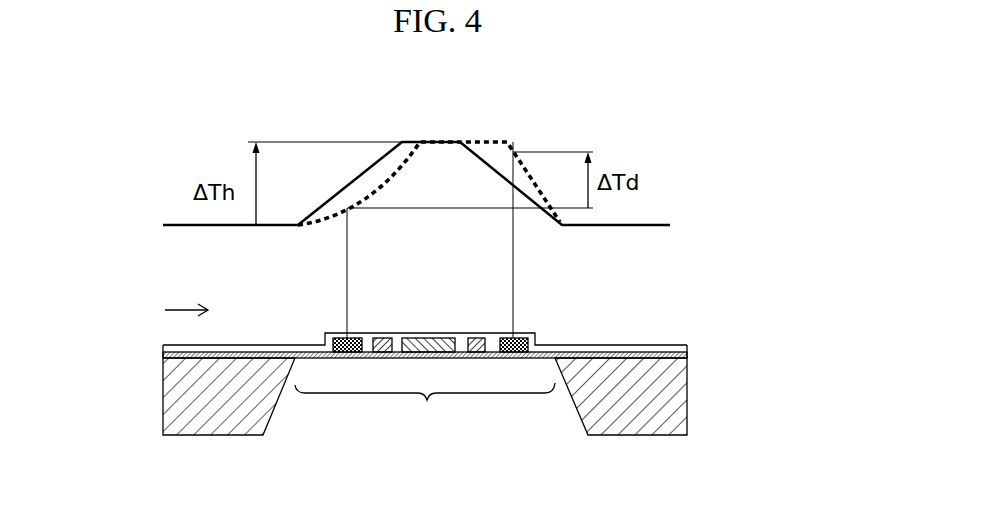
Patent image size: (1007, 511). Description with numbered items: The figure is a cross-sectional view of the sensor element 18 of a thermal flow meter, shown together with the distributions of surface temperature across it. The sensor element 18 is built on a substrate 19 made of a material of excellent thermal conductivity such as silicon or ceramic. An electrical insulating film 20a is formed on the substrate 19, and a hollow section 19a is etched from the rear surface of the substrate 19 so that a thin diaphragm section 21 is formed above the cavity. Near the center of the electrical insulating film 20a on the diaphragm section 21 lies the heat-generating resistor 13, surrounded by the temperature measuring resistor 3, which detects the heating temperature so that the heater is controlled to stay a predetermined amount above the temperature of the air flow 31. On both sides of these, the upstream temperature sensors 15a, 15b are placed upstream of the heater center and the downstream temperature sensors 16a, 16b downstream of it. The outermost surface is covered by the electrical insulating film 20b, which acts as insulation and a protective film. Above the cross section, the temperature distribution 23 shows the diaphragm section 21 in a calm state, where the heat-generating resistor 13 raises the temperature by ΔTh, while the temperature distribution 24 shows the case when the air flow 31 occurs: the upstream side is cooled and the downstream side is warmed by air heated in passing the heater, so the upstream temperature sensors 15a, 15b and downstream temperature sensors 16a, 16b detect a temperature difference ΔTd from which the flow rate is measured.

The temperature measuring resistor 3 is at (378, 336).
The heat-generating resistor 13 is at (430, 336).
The upstream temperature sensor 15a is at (302, 308).
The upstream temperature sensor 15b is at (337, 334).
The downstream temperature sensor 16a is at (559, 306).
The downstream temperature sensor 16b is at (520, 336).
The sensor element 18 is at (430, 403).
The substrate 19 is at (687, 390).
The hollow section 19a is at (313, 405).
The electrical insulating film 20a is at (687, 356).
The electrical insulating film 20b is at (687, 347).
The diaphragm section 21 is at (425, 410).
The temperature distribution 23 is at (340, 190).
The temperature distribution 24 is at (390, 174).
The air flow 31 is at (173, 306).